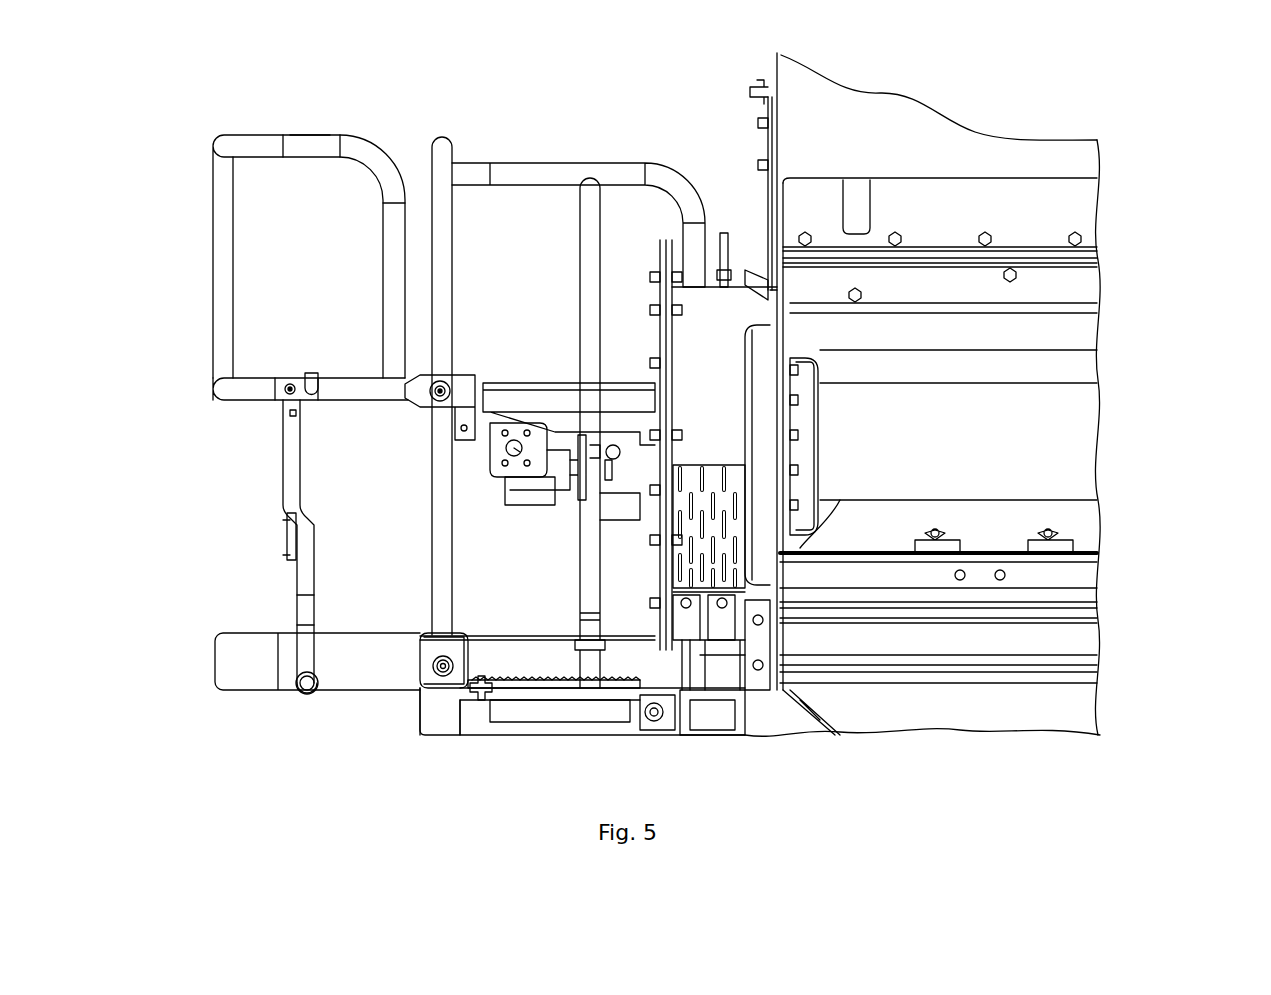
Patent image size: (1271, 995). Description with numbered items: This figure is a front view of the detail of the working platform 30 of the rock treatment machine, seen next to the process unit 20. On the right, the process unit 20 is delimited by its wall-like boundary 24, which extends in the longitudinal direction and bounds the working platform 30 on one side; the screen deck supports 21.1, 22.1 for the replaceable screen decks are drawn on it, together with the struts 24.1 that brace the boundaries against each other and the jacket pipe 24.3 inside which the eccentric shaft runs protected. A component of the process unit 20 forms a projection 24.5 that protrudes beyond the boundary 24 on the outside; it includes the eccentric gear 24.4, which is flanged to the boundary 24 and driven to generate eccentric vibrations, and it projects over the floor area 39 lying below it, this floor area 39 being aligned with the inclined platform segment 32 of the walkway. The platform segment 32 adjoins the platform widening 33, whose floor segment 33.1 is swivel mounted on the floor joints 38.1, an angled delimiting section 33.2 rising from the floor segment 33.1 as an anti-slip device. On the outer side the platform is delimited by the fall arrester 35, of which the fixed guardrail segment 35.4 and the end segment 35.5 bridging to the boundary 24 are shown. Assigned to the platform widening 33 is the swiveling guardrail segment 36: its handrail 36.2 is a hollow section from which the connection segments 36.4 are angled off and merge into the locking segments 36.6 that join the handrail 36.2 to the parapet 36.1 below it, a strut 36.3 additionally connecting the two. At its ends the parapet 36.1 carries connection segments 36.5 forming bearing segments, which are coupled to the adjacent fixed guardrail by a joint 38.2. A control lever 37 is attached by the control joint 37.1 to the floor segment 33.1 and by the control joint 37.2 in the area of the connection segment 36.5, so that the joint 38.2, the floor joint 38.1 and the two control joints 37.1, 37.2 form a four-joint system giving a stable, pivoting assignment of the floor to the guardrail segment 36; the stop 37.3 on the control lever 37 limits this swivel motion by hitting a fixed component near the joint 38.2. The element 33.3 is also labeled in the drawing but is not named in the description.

The process unit 20 is at (985, 128).
The screen deck support 21.1 is at (798, 230).
The screen deck support 22.1 is at (1075, 598).
The boundary 24 is at (808, 515).
The strut 24.1 is at (1072, 640).
The jacket pipe 24.3 is at (1060, 405).
The eccentric gear 24.4 is at (698, 300).
The projection 24.5 is at (645, 368).
The working platform 30 is at (548, 705).
The platform segment 32 is at (580, 705).
The platform widening 33 is at (209, 692).
The floor segment 33.1 is at (480, 700).
The delimiting section 33.2 is at (422, 660).
The bearing plate 33.3 is at (433, 632).
The fall arrester 35 is at (478, 162).
The guardrail segment 35.4 is at (442, 165).
The end segment 35.5 is at (568, 175).
The guardrail segment 36 is at (209, 136).
The parapet 36.1 is at (228, 383).
The handrail 36.2 is at (218, 150).
The strut 36.3 is at (223, 248).
The connection segment 36.4 is at (318, 148).
The connection segment 36.5 is at (342, 398).
The locking segment 36.6 is at (398, 250).
The control lever 37 is at (292, 452).
The control joint 37.1 is at (310, 695).
The control joint 37.2 is at (288, 380).
The stop 37.3 is at (290, 540).
The floor joint 38.1 is at (440, 690).
The joint 38.2 is at (455, 378).
The floor area 39 is at (555, 678).